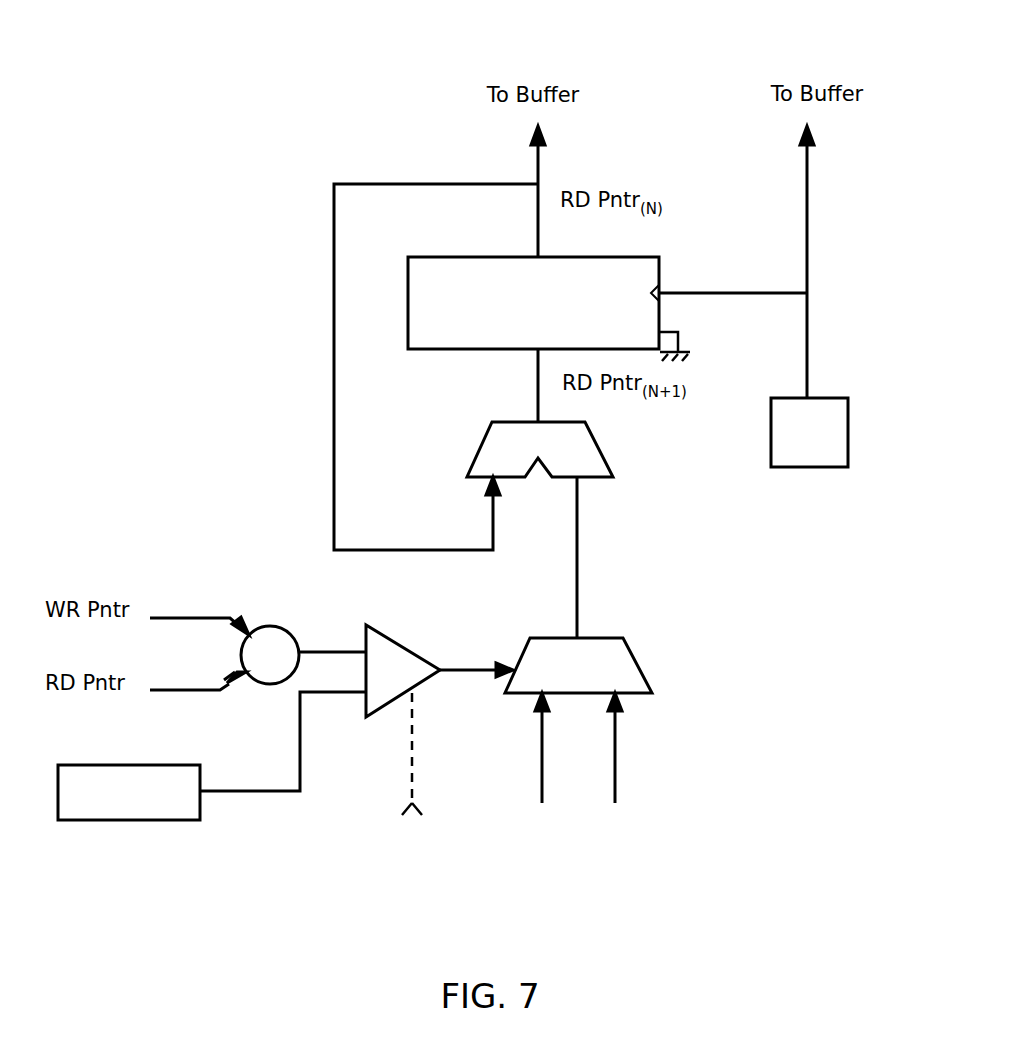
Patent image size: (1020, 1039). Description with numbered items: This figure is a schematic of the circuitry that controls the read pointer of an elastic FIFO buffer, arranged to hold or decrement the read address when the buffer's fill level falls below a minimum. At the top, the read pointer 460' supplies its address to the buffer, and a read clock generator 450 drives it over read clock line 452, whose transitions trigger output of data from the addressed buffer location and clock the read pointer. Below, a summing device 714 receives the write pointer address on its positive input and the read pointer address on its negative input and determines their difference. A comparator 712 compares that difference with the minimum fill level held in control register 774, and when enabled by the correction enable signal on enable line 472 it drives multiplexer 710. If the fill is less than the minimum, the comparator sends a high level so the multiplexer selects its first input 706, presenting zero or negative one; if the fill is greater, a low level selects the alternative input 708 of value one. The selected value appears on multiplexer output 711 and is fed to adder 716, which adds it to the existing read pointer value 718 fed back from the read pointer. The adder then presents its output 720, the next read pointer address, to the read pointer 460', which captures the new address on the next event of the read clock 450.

The read pointer 460' is at (576, 282).
The read clock line 452 is at (807, 243).
The read clock generator 450 is at (848, 440).
The adder output 720 is at (538, 397).
The adder 716 is at (600, 450).
The existing read pointer value 718 is at (334, 457).
The multiplexer output 711 is at (577, 570).
The multiplexer 710 is at (635, 653).
The alternative multiplexer input 708 is at (542, 772).
The first multiplexer input 706 is at (615, 772).
The summing device 714 is at (281, 628).
The comparator 712 is at (405, 645).
The enable line 472 is at (412, 758).
The control register 774 is at (162, 820).